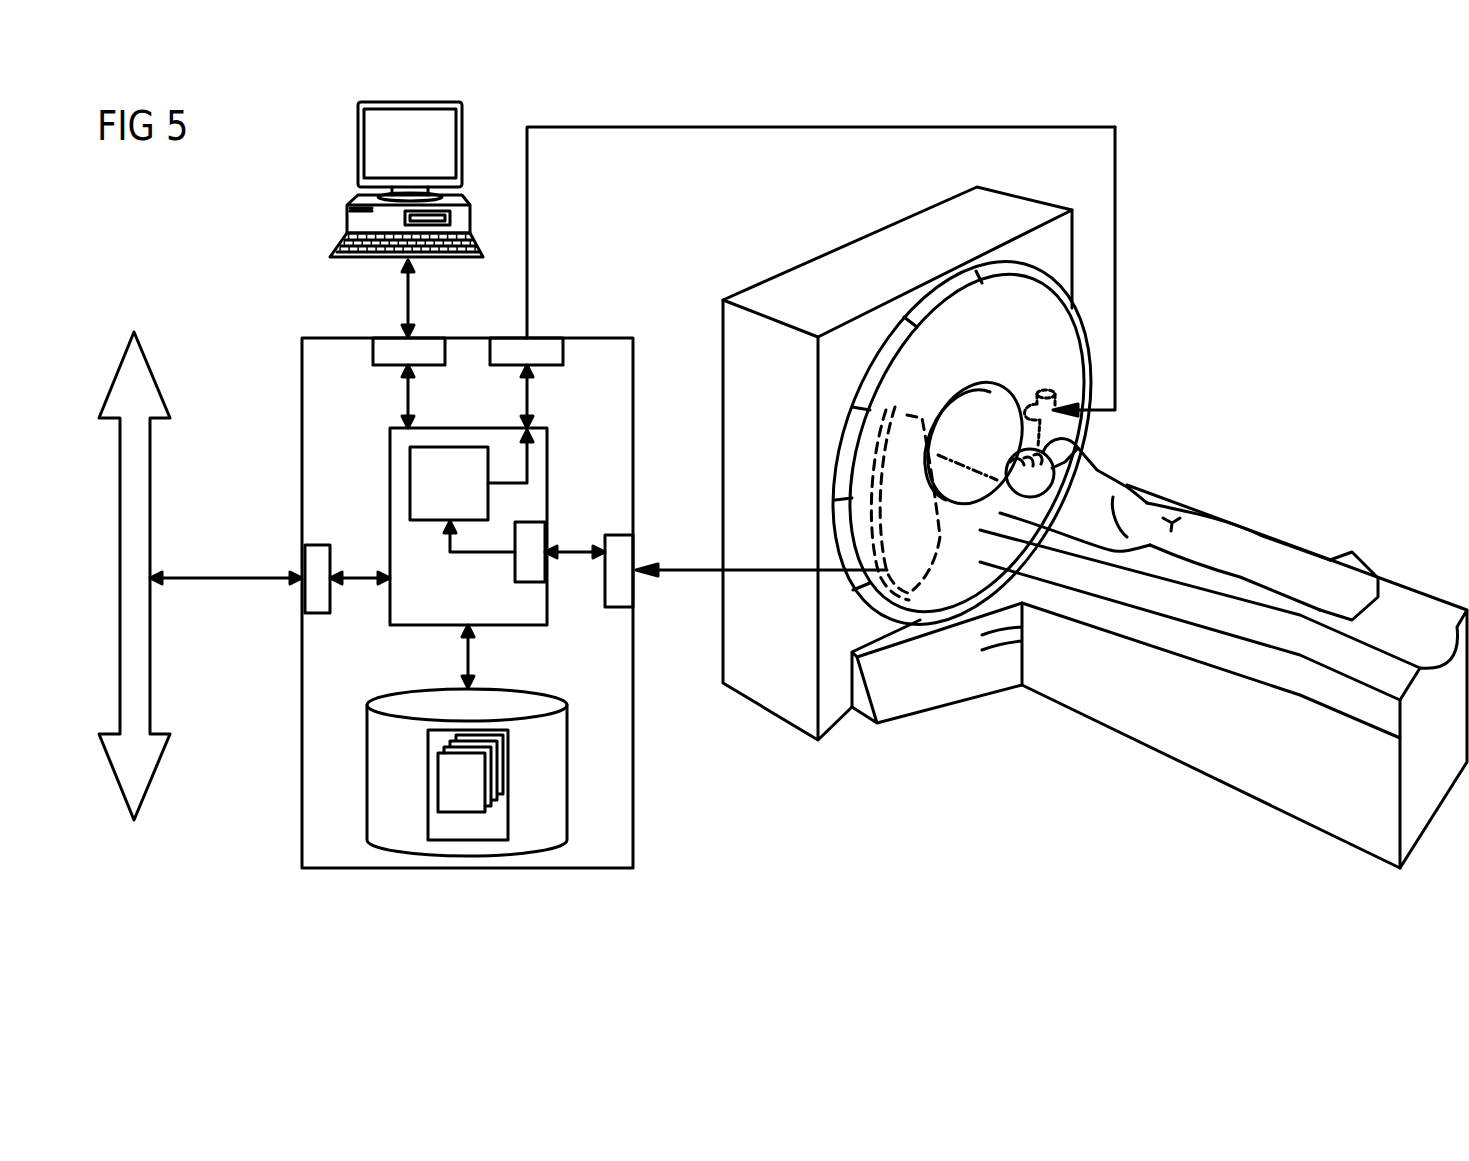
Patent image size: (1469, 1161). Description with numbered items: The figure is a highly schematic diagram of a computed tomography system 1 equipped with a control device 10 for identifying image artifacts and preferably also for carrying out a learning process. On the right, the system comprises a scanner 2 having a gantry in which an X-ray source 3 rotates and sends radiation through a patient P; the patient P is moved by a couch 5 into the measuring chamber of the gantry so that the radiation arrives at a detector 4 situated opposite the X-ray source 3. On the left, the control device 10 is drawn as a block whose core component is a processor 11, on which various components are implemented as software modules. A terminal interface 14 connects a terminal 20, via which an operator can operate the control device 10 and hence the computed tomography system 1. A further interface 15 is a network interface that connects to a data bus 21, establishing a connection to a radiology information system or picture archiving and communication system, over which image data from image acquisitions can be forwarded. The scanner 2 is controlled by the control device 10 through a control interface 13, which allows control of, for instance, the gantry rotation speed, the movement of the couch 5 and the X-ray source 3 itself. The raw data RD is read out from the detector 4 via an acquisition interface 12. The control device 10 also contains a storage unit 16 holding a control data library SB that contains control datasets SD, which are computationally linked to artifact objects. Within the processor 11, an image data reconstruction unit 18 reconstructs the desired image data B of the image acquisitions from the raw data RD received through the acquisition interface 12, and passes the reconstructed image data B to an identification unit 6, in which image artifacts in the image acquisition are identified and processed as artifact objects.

The computed tomography system 1 is at (1338, 322).
The scanner 2 is at (932, 207).
The X-ray source 3 is at (1050, 389).
The detector 4 is at (916, 590).
The couch 5 is at (1215, 768).
The identification unit 6 is at (403, 523).
The control device 10 is at (467, 347).
The processor 11 is at (468, 435).
The acquisition interface 12 is at (621, 607).
The control interface 13 is at (544, 347).
The terminal interface 14 is at (393, 347).
The network interface 15 is at (313, 548).
The storage unit 16 is at (498, 698).
The image data reconstruction unit 18 is at (537, 540).
The terminal 20 is at (358, 143).
The data bus 21 is at (152, 462).
The patient P is at (1152, 464).
The raw data RD is at (674, 562).
The image data B is at (483, 553).
The control data library SB is at (447, 827).
The control datasets SD is at (463, 798).